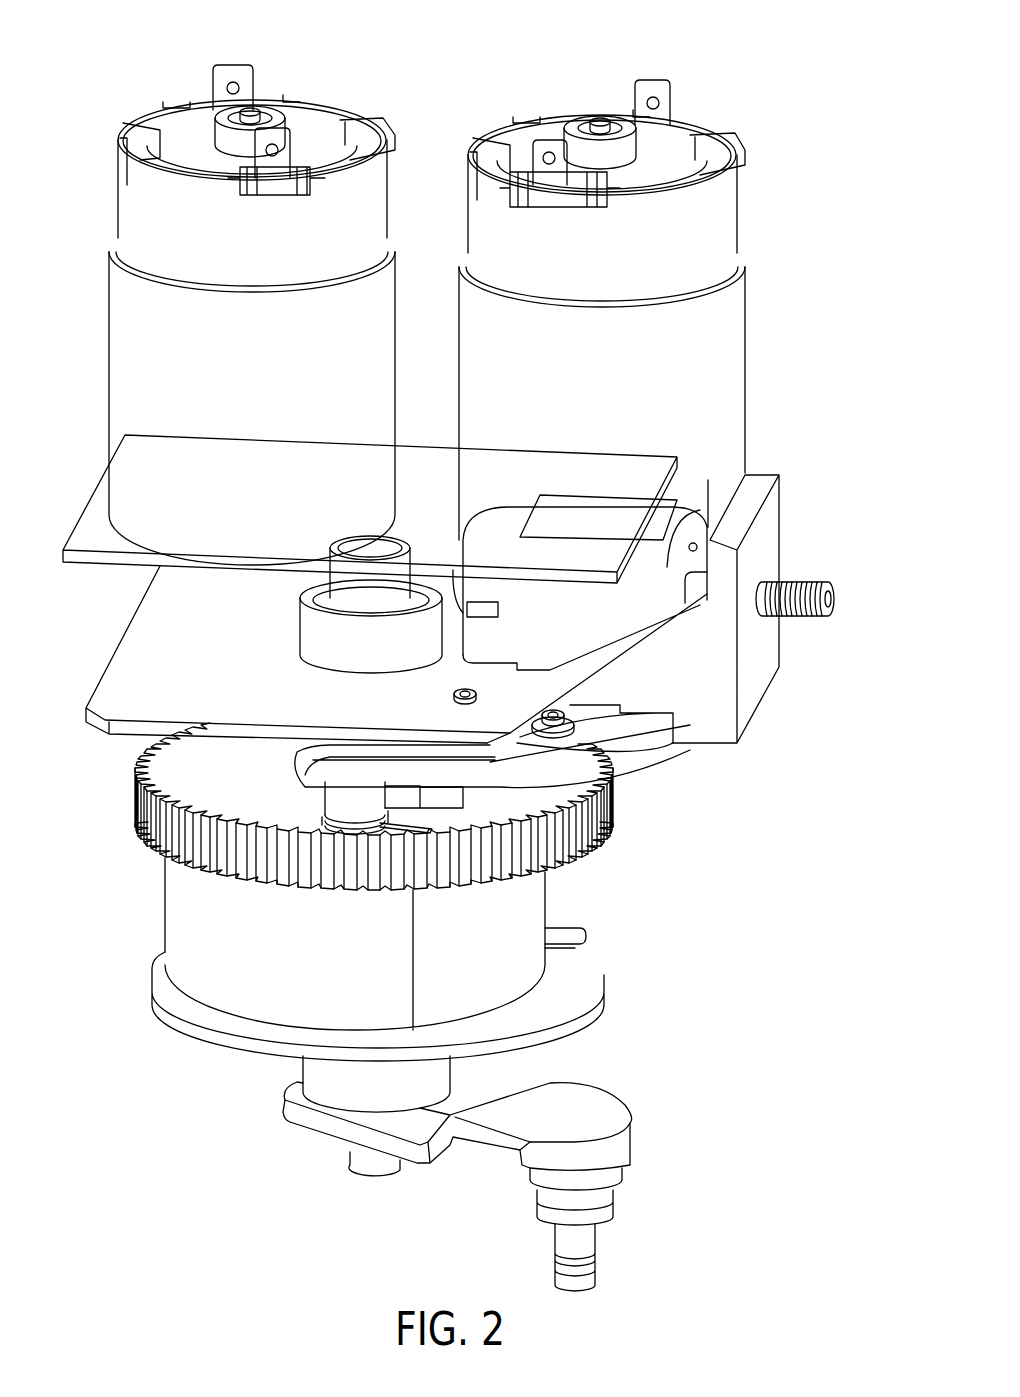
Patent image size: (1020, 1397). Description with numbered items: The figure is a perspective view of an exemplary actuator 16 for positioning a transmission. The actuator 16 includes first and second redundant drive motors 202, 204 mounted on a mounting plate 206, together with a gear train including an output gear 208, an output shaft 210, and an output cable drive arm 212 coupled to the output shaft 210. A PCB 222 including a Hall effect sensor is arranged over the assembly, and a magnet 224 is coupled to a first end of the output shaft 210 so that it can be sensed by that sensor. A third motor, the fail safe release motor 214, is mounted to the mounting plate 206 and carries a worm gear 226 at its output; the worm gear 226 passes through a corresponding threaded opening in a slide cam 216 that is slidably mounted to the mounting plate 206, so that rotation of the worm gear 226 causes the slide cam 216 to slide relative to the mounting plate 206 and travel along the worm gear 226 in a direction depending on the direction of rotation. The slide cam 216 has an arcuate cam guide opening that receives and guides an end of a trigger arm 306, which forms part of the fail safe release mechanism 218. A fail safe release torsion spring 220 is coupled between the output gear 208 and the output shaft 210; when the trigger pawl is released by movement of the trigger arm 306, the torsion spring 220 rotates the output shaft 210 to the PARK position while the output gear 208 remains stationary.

The actuator 16 is at (148, 70).
The first redundant drive motor 202 is at (383, 290).
The second redundant drive motor 204 is at (742, 290).
The mounting plate 206 is at (118, 683).
The output gear 208 is at (132, 812).
The output shaft 210 is at (568, 1018).
The output cable drive arm 212 is at (598, 1205).
The fail safe release motor 214 is at (668, 556).
The slide cam 216 is at (762, 657).
The fail safe release mechanism 218 is at (445, 795).
The fail safe release torsion spring 220 is at (573, 933).
The PCB 222 is at (636, 468).
The magnet 224 is at (395, 536).
The worm gear 226 is at (833, 600).
The trigger arm 306 is at (613, 797).